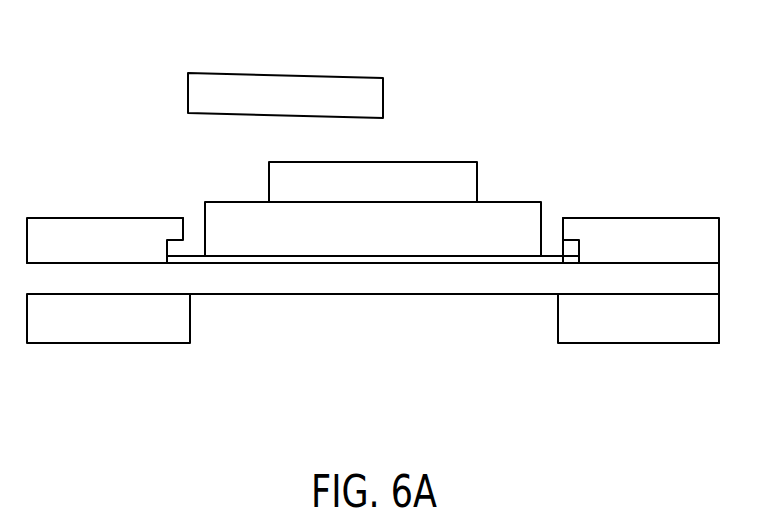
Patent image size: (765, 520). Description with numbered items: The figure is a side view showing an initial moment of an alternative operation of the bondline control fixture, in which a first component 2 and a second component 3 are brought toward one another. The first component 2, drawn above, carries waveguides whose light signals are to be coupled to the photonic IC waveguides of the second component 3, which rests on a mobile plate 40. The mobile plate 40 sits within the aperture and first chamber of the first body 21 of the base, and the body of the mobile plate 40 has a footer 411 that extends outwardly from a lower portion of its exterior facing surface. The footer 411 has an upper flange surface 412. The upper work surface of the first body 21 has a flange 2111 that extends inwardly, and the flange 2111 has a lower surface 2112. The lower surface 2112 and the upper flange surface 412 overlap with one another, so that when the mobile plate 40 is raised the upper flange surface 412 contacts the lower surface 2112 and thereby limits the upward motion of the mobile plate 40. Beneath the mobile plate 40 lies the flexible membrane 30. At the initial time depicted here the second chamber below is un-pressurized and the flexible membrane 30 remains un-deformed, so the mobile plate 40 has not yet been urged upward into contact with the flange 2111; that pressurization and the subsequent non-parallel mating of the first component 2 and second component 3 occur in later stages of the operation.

The first component 2 is at (216, 80).
The second component 3 is at (448, 172).
The mobile plate 40 is at (515, 215).
The flange 2111 is at (135, 225).
The lower surface 2112 is at (184, 228).
The first body 21 is at (657, 223).
The upper flange surface 412 is at (560, 252).
The footer 411 is at (558, 258).
The flexible membrane 30 is at (269, 282).